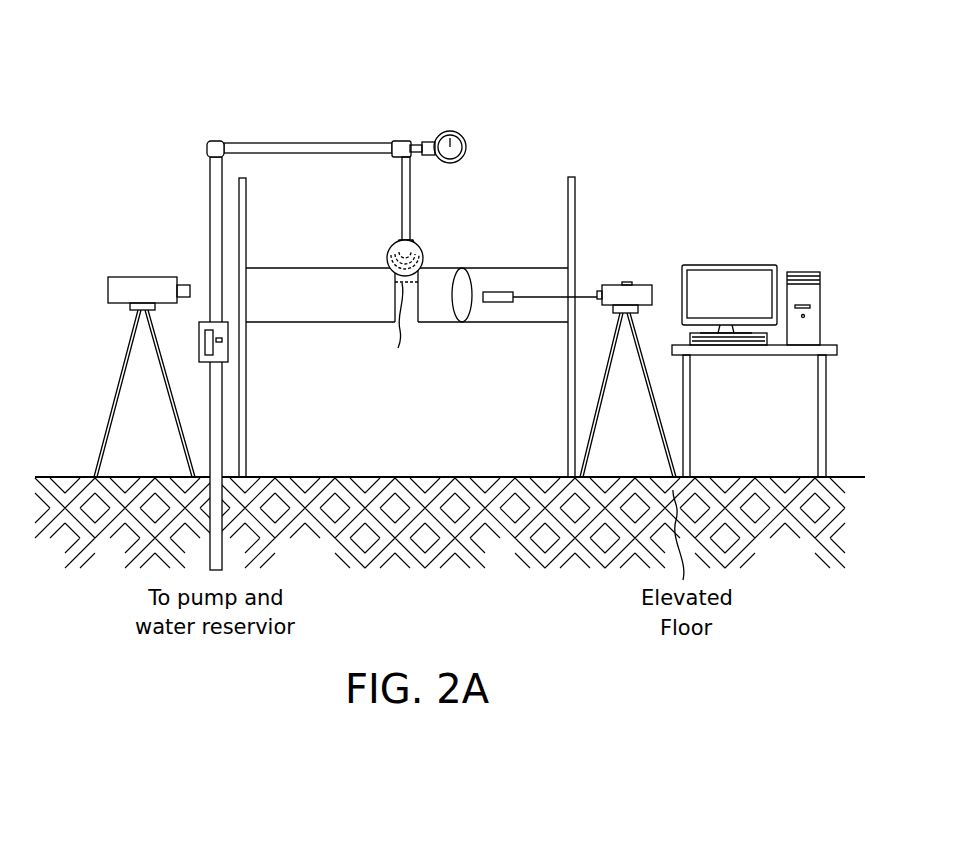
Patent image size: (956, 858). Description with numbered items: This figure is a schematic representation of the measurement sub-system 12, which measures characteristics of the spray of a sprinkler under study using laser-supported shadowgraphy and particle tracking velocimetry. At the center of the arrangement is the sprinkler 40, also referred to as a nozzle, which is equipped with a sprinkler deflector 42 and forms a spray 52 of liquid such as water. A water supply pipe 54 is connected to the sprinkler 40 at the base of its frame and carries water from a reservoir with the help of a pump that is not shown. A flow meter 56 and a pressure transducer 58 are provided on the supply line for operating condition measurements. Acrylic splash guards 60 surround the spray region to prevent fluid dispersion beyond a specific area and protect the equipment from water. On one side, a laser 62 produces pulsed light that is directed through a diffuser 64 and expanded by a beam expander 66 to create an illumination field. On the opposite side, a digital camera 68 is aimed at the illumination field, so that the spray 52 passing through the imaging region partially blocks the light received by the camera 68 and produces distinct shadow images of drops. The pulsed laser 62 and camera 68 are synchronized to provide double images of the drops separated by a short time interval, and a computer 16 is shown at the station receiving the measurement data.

The measurement sub-system 12 is at (556, 100).
The computer 16 is at (747, 241).
The sprinkler 40 is at (424, 231).
The sprinkler deflector 42 is at (422, 256).
The spray 52 is at (390, 331).
The water supply pipe 54 is at (207, 182).
The flow meter 56 is at (199, 340).
The pressure transducer 58 is at (468, 122).
The acrylic splash guards 60 is at (308, 268).
The laser 62 is at (627, 283).
The diffuser 64 is at (500, 303).
The beam expander 66 is at (462, 308).
The digital camera 68 is at (140, 277).